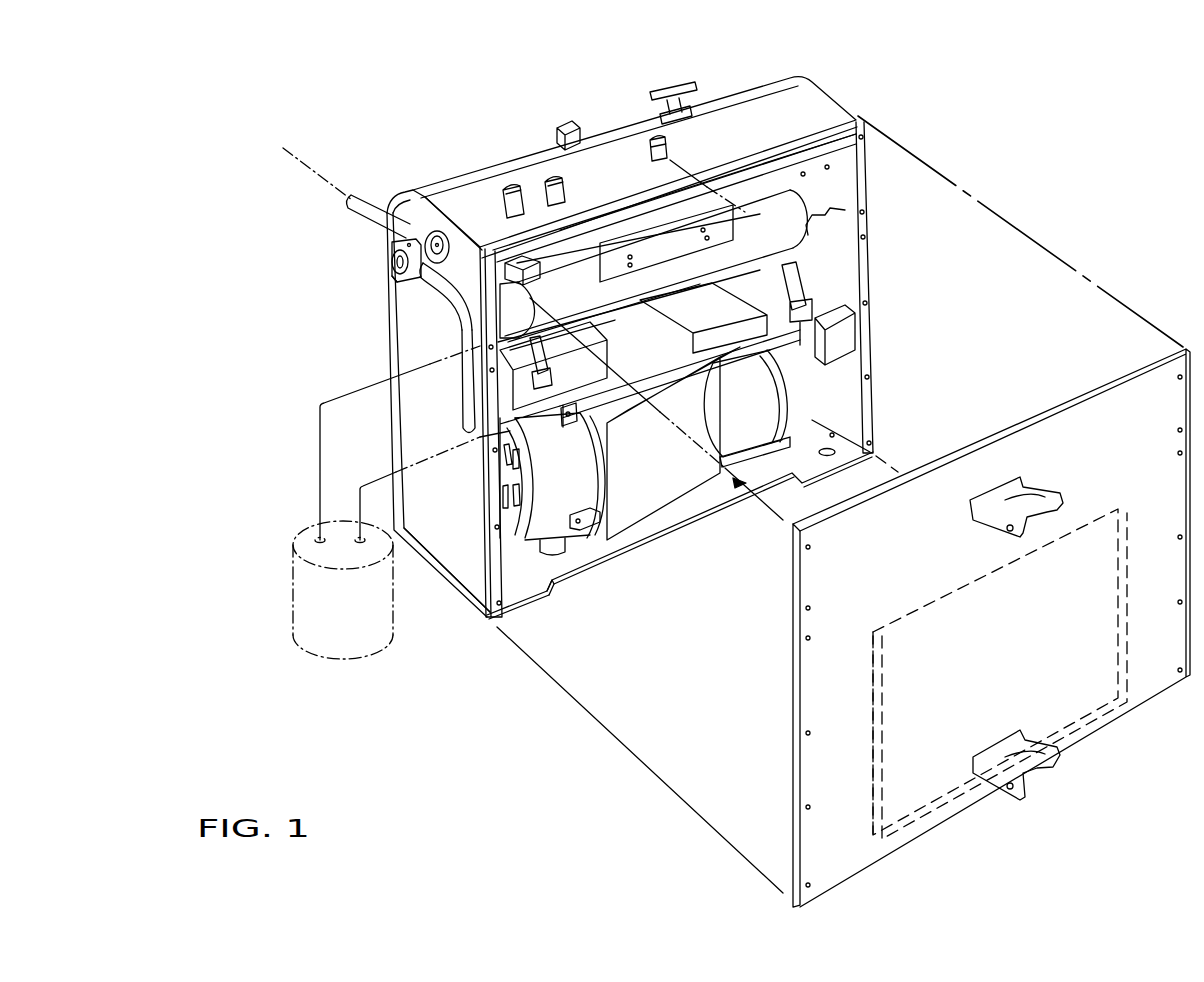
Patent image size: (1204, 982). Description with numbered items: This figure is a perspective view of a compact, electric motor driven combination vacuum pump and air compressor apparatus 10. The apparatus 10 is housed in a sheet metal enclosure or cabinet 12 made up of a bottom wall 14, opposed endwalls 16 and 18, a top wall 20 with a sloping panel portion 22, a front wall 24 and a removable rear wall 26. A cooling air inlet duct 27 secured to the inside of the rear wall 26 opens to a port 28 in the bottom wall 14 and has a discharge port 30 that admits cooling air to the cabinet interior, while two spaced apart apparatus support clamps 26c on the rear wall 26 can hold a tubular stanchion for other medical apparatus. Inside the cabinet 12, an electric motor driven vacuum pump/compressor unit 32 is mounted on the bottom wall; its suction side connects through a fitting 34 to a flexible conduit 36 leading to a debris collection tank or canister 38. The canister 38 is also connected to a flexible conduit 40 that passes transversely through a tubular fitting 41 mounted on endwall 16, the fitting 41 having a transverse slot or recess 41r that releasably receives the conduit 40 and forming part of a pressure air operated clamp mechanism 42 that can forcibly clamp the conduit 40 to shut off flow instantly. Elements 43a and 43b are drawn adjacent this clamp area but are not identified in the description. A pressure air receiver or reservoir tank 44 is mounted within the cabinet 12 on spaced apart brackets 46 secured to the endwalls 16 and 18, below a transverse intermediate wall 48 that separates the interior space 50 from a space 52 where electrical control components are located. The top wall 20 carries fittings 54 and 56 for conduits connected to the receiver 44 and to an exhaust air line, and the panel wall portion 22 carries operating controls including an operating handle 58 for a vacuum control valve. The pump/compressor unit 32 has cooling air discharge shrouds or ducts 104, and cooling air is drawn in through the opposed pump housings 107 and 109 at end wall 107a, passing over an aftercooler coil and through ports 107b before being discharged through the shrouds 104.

The combination vacuum pump and air compressor apparatus 10 is at (935, 140).
The cabinet 12 is at (858, 110).
The bottom wall 14 is at (533, 603).
The endwall 16 is at (433, 580).
The endwall 18 is at (870, 253).
The top wall 20 is at (810, 112).
The sloping panel portion 22 is at (402, 200).
The front wall 24 is at (386, 328).
The removable rear wall 26 is at (812, 757).
The apparatus support clamps 26c is at (987, 537).
The cooling air inlet duct 27 is at (867, 673).
The port 28 is at (578, 574).
The discharge port 30 is at (903, 617).
The vacuum pump/compressor unit 32 is at (521, 517).
The fitting 34 is at (666, 152).
The flexible conduit 36 is at (660, 262).
The debris collection canister 38 is at (313, 600).
The flexible conduit 40 is at (467, 373).
The tubular fitting 41 is at (425, 288).
The transverse slot 41r is at (430, 298).
The clamp mechanism 42 is at (412, 272).
The handle pivot boss 43a is at (449, 244).
The handle pivot boss 43b is at (390, 268).
The pressure air receiver 44 is at (802, 250).
The brackets 46 is at (827, 210).
The transverse intermediate wall 48 is at (845, 155).
The interior space 50 is at (833, 307).
The space 52 is at (750, 183).
The fitting 54 is at (549, 180).
The fitting 56 is at (515, 189).
The operating handle 58 is at (647, 96).
The cooling air discharge shrouds 104 is at (668, 507).
The pump housing 107 is at (573, 480).
The end wall 107a is at (500, 460).
The ports 107b is at (500, 498).
The pump housing 109 is at (769, 419).